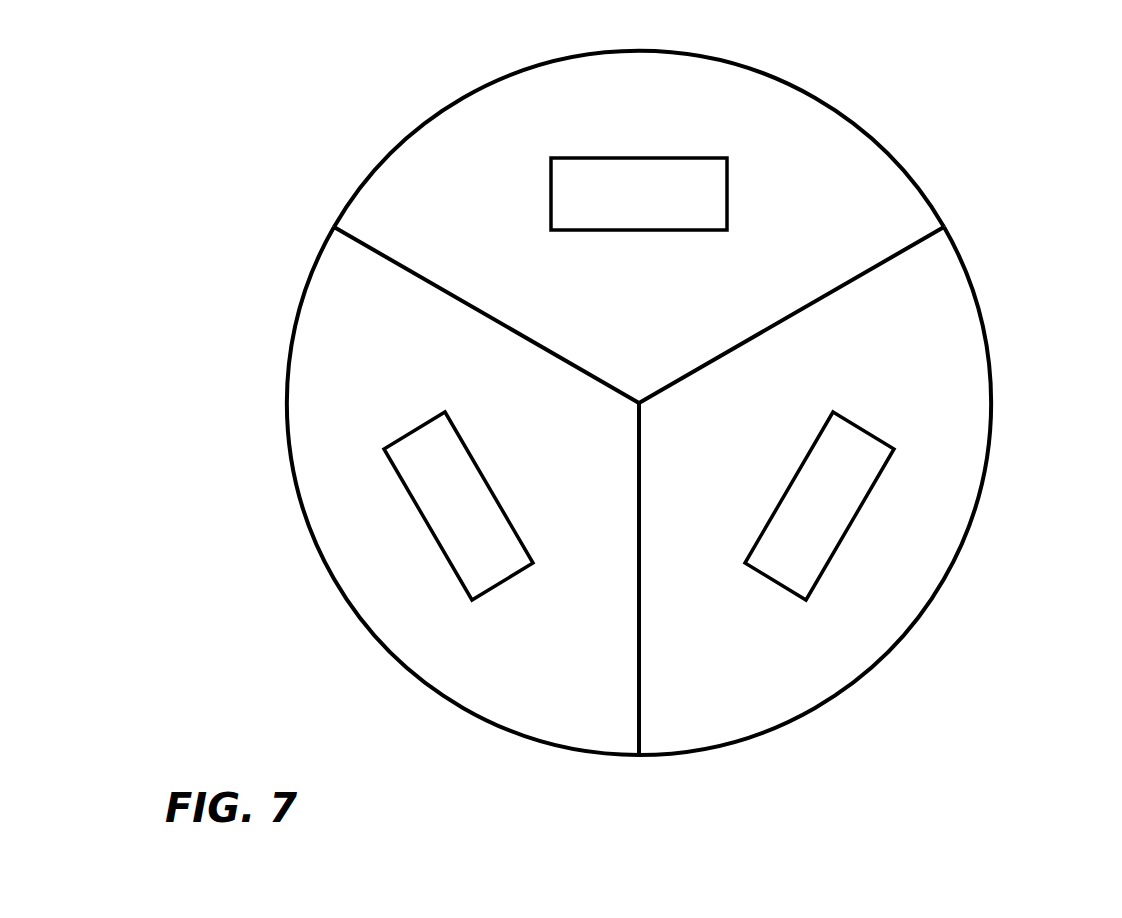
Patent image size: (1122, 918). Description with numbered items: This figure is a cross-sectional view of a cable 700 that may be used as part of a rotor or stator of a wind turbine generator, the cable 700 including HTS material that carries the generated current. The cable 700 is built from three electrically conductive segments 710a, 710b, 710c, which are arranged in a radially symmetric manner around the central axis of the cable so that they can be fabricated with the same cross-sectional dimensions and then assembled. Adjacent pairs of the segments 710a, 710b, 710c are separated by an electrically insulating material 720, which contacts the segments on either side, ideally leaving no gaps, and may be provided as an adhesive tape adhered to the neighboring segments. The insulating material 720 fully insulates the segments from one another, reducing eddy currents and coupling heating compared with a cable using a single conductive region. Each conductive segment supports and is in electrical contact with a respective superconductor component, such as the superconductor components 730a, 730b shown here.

The cable 700 is at (340, 85).
The electrically conductive segment 710a is at (833, 153).
The electrically conductive segment 710b is at (957, 347).
The electrically conductive segment 710c is at (320, 357).
The electrically insulating material 720 is at (368, 250).
The superconductor component 730a is at (639, 194).
The superconductor component 730b is at (639, 506).